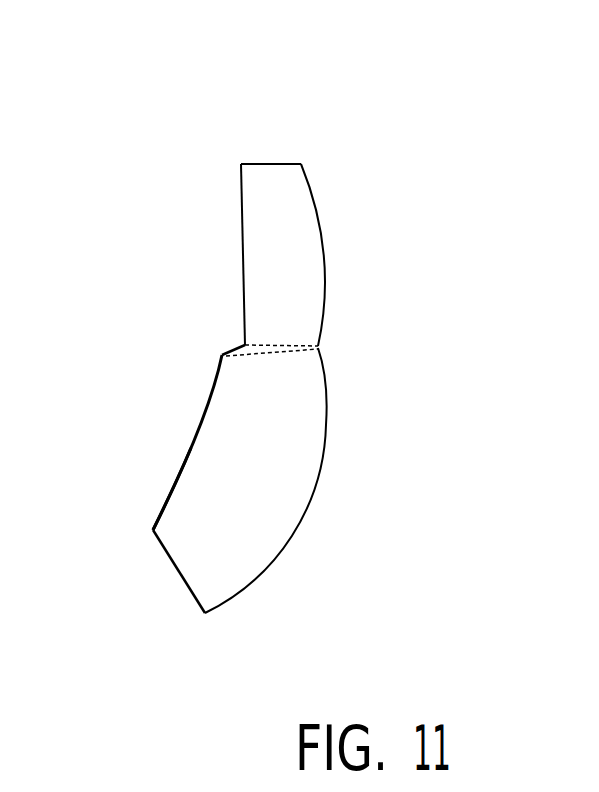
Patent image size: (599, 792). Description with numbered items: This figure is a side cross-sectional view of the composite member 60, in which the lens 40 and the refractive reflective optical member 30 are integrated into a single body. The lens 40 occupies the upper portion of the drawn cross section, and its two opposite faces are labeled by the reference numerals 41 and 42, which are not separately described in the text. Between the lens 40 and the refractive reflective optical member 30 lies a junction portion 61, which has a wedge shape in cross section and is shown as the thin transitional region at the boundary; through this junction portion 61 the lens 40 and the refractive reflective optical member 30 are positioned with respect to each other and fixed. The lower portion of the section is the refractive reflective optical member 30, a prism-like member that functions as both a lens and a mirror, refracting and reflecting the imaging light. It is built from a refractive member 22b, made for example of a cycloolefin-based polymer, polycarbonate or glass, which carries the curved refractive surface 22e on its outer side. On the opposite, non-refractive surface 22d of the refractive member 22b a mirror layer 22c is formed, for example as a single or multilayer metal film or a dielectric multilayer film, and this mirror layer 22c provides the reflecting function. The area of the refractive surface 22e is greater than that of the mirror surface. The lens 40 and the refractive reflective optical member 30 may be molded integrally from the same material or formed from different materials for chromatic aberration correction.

The composite member 60 is at (280, 350).
The lens 40 is at (292, 247).
The first side surface of second member 41 is at (244, 262).
The second side surface of second member 42 is at (324, 283).
The junction portion 61 is at (241, 346).
The refractive reflective optical member 30 is at (280, 508).
The refractive member 22b is at (182, 590).
The mirror layer 22c is at (197, 428).
The non-refractive surface 22d is at (172, 492).
The refractive surface 22e is at (309, 503).